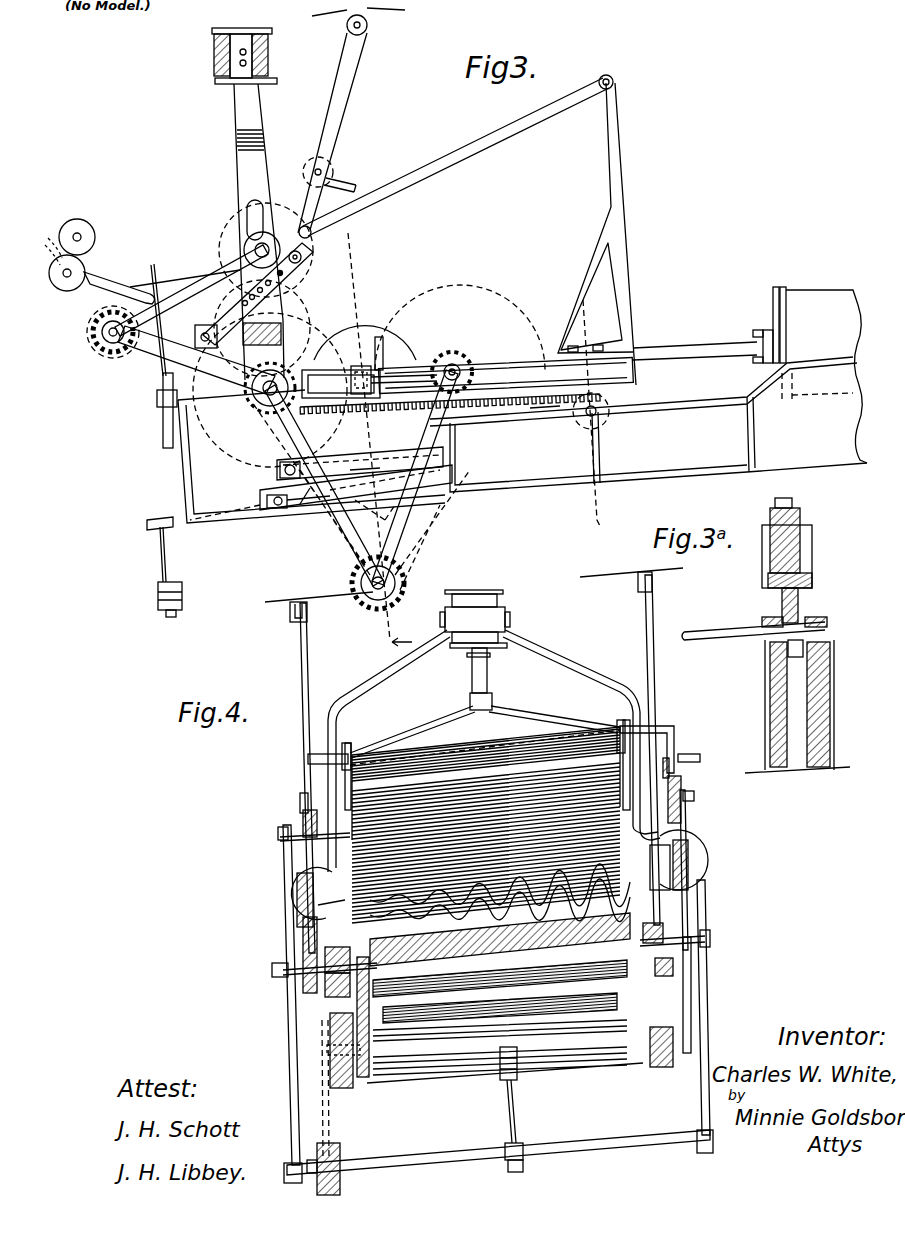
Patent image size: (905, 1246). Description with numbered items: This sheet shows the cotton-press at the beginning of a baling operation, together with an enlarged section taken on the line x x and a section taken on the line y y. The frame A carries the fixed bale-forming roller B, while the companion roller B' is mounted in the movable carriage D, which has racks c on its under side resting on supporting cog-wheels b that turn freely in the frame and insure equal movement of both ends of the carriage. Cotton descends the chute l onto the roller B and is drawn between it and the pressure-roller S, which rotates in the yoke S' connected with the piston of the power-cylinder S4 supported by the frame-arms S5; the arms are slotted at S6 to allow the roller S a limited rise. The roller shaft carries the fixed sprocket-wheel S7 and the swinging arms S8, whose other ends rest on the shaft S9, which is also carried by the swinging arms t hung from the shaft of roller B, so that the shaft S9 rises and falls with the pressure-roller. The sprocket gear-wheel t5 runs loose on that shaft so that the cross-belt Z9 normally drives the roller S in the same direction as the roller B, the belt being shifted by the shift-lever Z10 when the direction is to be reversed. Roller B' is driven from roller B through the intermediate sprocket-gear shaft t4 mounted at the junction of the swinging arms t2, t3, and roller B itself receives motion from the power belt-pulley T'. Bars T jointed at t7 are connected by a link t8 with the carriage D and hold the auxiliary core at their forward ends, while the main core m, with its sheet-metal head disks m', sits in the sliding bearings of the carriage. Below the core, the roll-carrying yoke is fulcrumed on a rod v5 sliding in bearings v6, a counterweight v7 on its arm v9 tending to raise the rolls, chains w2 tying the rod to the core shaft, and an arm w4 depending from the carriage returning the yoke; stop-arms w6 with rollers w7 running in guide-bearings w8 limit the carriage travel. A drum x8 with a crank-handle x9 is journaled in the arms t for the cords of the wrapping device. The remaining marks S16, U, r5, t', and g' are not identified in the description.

In FIG. 3, the power-cylinder S4 is at (268, 66).
In FIG. 4, the power-cylinder S4 is at (478, 598).
In FIG. 3, the frame-arms S5 is at (245, 116).
In FIG. 4, the frame-arms S5 is at (392, 668).
In FIG. 3, the power belt-pulley T' is at (351, 120).
In FIG. 4, the power belt-pulley T' is at (657, 748).
In FIG. 3, the drum x8 is at (325, 168).
In FIG. 4, the drum x8 is at (556, 735).
In FIG. 3, the crank-handle x9 is at (356, 186).
In FIG. 4, the crank-handle x9 is at (702, 760).
In FIG. 3, the link t8 is at (466, 152).
In FIG. 4, the link t8 is at (306, 766).
In FIG. 3, the section line x x is at (597, 308).
In FIG. 3, the cross-belt Z9 is at (255, 240).
In FIG. 3, the slot S6 is at (250, 205).
In FIG. 3, the hub S16 is at (270, 240).
In FIG. 4, the hub S16 is at (303, 820).
In FIG. 3, the section line y y is at (369, 429).
In FIG. 4, the section line y y is at (402, 646).
In FIG. 3, the chute l is at (130, 288).
In FIG. 3, the swinging arms S8 is at (205, 272).
In FIG. 4, the swinging arms S8 is at (292, 848).
In FIG. 3, the pivot pin U is at (302, 258).
In FIG. 3, the jointed bars T is at (258, 294).
In FIG. 4, the jointed bars T is at (291, 777).
In FIG. 3, the compressing roller B' is at (460, 323).
In FIG. 3, the compressing roller B is at (315, 328).
In FIG. 3, the sheet-metal disks m' is at (376, 330).
In FIG. 3, the core m is at (369, 382).
In FIG. 3, the sprocket gear-wheel t5 is at (93, 336).
In FIG. 4, the sprocket gear-wheel t5 is at (690, 852).
In FIG. 3, the shaft S9 is at (102, 348).
In FIG. 4, the shaft S9 is at (655, 860).
In FIG. 3, the joint t7 is at (198, 330).
In FIG. 4, the joint t7 is at (300, 803).
In FIG. 3, the swinging arms t is at (232, 390).
In FIG. 4, the swinging arms t is at (496, 986).
In FIG. 3, the gear r5 is at (446, 362).
In FIG. 3, the carriage D is at (467, 385).
In FIG. 3A, the carriage D is at (803, 560).
In FIG. 3, the supporting cog-wheels b is at (470, 406).
In FIG. 3A, the supporting cog-wheels b is at (800, 600).
In FIG. 3, the racks c is at (545, 412).
In FIG. 3A, the racks c is at (768, 582).
In FIG. 3, the shift-lever Z10 is at (165, 430).
In FIG. 3, the frame A is at (665, 456).
In FIG. 3A, the frame A is at (822, 702).
In FIG. 3, the stop-arms w6 is at (290, 452).
In FIG. 4, the stop-arms w6 is at (300, 1005).
In FIG. 3, the rollers w7 is at (280, 470).
In FIG. 4, the rollers w7 is at (330, 1050).
In FIG. 3, the chains w2 is at (361, 451).
In FIG. 3, the guide-bearings w8 is at (372, 465).
In FIG. 3, the rod v5 is at (268, 512).
In FIG. 3, the bearings v6 is at (283, 511).
In FIG. 3, the arm w4 is at (308, 508).
In FIG. 3, the arm of yoke v9 is at (148, 523).
In FIG. 4, the arm of yoke v9 is at (518, 1078).
In FIG. 3, the adjustable counterweight v7 is at (158, 600).
In FIG. 4, the adjustable counterweight v7 is at (524, 1168).
In FIG. 3, the swinging arm t2 is at (345, 562).
In FIG. 3, the swinging arm t3 is at (430, 530).
In FIG. 3, the intermediate sprocket-gear shaft t4 is at (404, 583).
In FIG. 4, the intermediate sprocket-gear shaft t4 is at (443, 1162).
In FIG. 3, the link t' is at (369, 515).
In FIG. 4, the pressure-roller S is at (487, 821).
In FIG. 4, the yoke S' is at (489, 784).
In FIG. 4, the fixed sprocket-wheel S7 is at (682, 790).
In FIG. 4, the roller g' is at (505, 998).